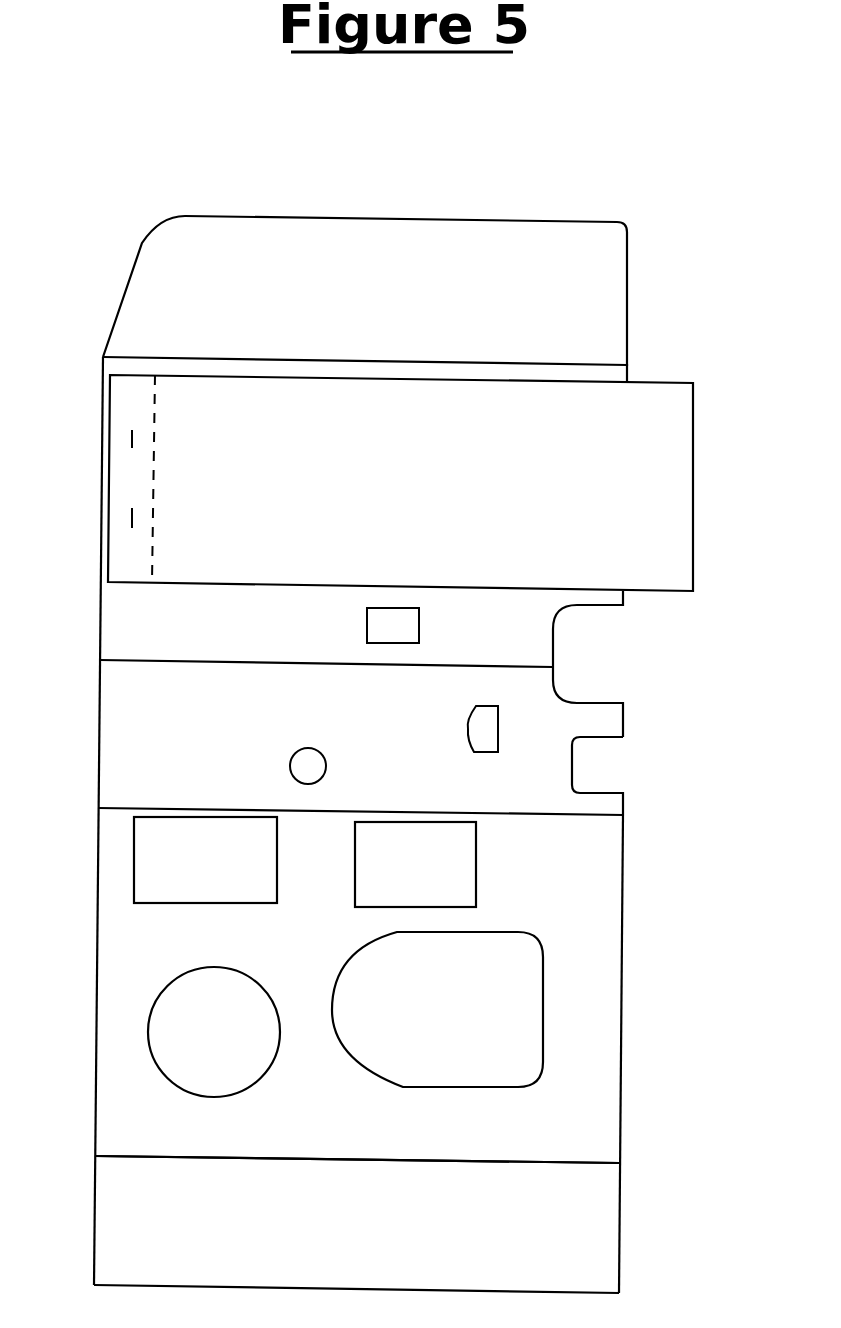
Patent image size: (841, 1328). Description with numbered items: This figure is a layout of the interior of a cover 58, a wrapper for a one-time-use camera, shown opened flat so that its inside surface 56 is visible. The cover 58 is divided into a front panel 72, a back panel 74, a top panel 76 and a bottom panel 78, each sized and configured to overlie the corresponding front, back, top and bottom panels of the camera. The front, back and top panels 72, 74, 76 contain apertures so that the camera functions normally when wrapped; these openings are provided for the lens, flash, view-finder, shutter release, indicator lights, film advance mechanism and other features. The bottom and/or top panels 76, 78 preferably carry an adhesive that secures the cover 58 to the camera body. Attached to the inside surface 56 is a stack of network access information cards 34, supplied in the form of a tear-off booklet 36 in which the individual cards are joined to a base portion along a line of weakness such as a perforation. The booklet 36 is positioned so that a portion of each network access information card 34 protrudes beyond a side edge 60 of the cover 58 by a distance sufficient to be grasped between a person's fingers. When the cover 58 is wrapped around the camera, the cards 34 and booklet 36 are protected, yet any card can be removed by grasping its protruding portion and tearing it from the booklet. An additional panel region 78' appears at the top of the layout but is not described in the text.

The network access information card 34 is at (693, 424).
The tear-off booklet 36 is at (664, 536).
The inside surface 56 is at (532, 640).
The cover 58 is at (620, 883).
The side edge 60 is at (627, 373).
The front panel 72 is at (583, 987).
The back panel 74 is at (130, 621).
The top panel 76 is at (555, 762).
The bottom panel 78 is at (323, 1197).
The roof panel 78' is at (333, 291).